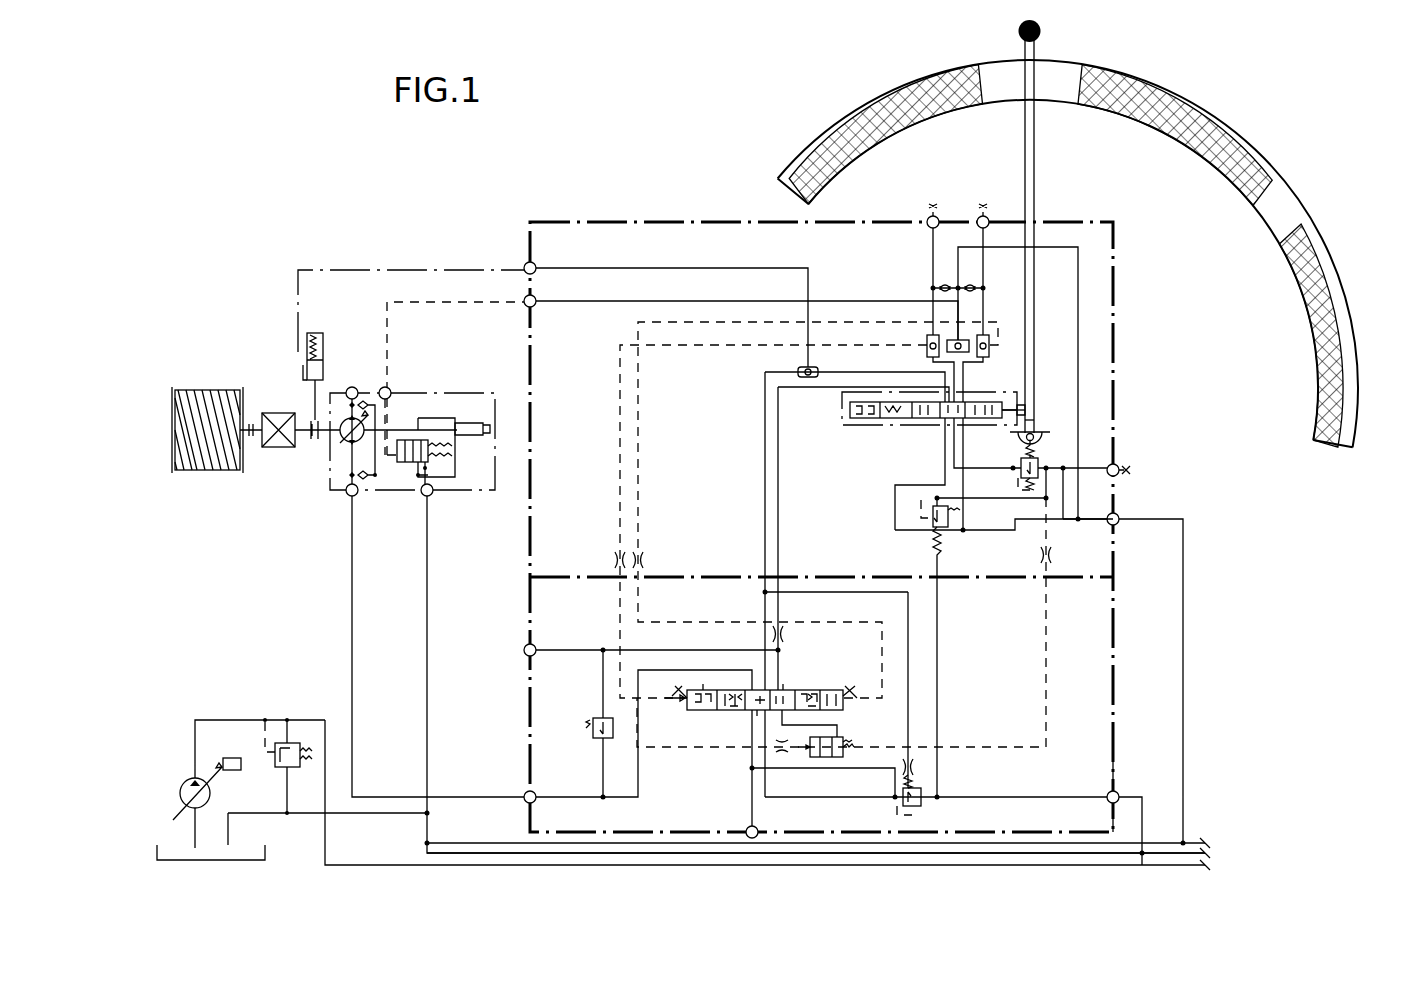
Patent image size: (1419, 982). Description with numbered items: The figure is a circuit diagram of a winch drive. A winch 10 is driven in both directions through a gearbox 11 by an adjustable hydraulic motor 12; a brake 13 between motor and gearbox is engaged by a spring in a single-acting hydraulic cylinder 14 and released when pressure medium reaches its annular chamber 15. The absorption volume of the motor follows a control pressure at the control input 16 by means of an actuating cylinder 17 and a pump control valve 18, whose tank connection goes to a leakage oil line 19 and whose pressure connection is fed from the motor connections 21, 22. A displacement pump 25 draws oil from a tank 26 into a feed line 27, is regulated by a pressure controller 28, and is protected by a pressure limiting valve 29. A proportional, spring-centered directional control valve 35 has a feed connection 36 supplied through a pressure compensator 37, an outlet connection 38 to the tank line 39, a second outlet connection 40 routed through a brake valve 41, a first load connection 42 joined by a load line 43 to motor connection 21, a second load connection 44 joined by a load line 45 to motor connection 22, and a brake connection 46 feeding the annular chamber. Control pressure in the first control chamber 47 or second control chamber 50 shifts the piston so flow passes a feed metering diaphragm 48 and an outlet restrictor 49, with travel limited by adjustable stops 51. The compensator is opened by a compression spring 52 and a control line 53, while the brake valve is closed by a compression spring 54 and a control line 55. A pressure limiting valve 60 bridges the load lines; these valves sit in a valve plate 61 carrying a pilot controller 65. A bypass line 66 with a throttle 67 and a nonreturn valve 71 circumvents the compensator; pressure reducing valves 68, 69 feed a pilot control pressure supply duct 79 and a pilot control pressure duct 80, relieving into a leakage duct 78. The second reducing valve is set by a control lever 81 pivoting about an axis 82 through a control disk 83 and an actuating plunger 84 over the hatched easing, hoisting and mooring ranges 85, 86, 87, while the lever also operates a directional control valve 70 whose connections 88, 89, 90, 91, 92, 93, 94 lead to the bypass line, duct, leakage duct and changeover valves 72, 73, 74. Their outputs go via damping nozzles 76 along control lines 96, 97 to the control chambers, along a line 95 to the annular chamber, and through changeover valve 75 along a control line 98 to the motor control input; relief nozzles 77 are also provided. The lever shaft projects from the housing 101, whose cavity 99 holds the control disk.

The winch 10 is at (190, 465).
The gearbox 11 is at (276, 462).
The hydraulic motor 12 is at (345, 440).
The brake 13 is at (310, 462).
The hydraulic cylinder 14 is at (316, 333).
The annular chamber 15 is at (303, 372).
The control input 16 is at (385, 387).
The actuating cylinder 17 is at (490, 430).
The pump control valve 18 is at (417, 482).
The leakage oil line 19 is at (366, 403).
The motor connection 21 is at (350, 496).
The motor connection 22 is at (352, 387).
The displacement pump 25 is at (185, 780).
The tank 26 is at (165, 848).
The feed line 27 is at (1142, 790).
The pressure controller 28 is at (232, 758).
The pressure limiting valve 29 is at (290, 743).
The directional control valve 35 is at (832, 684).
The feed connection 36 is at (752, 712).
The pressure compensator 37 is at (922, 788).
The outlet connection 38 is at (762, 712).
The tank line 39 is at (1025, 852).
The second outlet connection 40 is at (782, 728).
The brake valve 41 is at (850, 760).
The first load connection 42 is at (740, 690).
The load line 43 is at (353, 757).
The second load connection 44 is at (784, 690).
The load line 45 is at (445, 370).
The brake connection 46 is at (760, 690).
The first control chamber 47 is at (668, 702).
The feed metering diaphragm 48 is at (812, 690).
The outlet restrictor 49 is at (740, 708).
The second control chamber 50 is at (908, 705).
The adjustable stops 51 is at (680, 690).
The compression spring 52 is at (912, 775).
The control line 53 is at (940, 705).
The compression spring 54 is at (850, 742).
The control line 55 is at (1050, 640).
The pressure limiting valve 60 is at (597, 718).
The valve plate 61 is at (1110, 640).
The pilot controller 65 is at (667, 212).
The bypass line 66 is at (912, 680).
The throttle 67 is at (785, 632).
The pressure reducing valve 68 is at (930, 525).
The pressure reducing valve 69 is at (1050, 455).
The directional control valve 70 is at (840, 435).
The nonreturn valve 71 is at (930, 540).
The changeover valve 72 is at (990, 352).
The changeover valve 73 is at (928, 340).
The changeover valve 74 is at (803, 365).
The changeover valve 75 is at (962, 340).
The damping nozzles 76 is at (618, 552).
The relief nozzles 77 is at (943, 285).
The leakage duct 78 is at (1097, 525).
The pilot control pressure supply duct 79 is at (988, 532).
The pilot control pressure duct 80 is at (1000, 468).
The control lever 81 is at (1040, 170).
The pivot axis 82 is at (1038, 428).
The control disk 83 is at (1040, 438).
The actuating plunger 84 is at (1048, 455).
The easing angular range 85 is at (850, 150).
The hoisting angular range 86 is at (1210, 130).
The mooring angular range 87 is at (1325, 300).
The connection 88 is at (935, 405).
The connection 89 is at (945, 425).
The connection 90 is at (953, 430).
The connection 91 is at (1018, 440).
The connection 92 is at (1012, 392).
The connection 93 is at (965, 405).
The connection 94 is at (945, 405).
The line 95 is at (458, 268).
The control line 96 is at (640, 350).
The control line 97 is at (620, 350).
The control line 98 is at (462, 306).
The cavity 99 is at (980, 214).
The housing 101 is at (1100, 308).